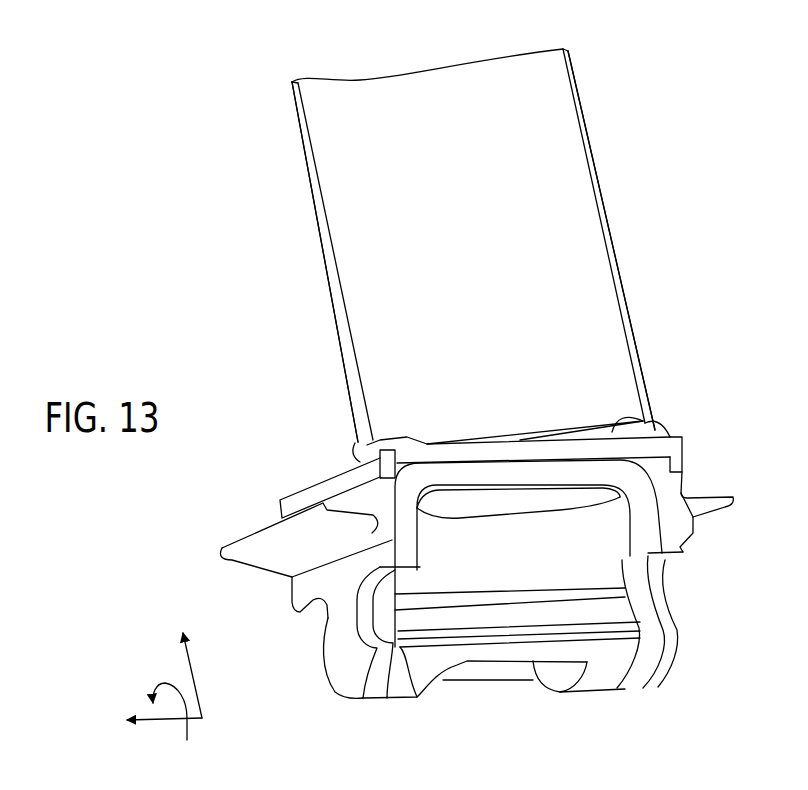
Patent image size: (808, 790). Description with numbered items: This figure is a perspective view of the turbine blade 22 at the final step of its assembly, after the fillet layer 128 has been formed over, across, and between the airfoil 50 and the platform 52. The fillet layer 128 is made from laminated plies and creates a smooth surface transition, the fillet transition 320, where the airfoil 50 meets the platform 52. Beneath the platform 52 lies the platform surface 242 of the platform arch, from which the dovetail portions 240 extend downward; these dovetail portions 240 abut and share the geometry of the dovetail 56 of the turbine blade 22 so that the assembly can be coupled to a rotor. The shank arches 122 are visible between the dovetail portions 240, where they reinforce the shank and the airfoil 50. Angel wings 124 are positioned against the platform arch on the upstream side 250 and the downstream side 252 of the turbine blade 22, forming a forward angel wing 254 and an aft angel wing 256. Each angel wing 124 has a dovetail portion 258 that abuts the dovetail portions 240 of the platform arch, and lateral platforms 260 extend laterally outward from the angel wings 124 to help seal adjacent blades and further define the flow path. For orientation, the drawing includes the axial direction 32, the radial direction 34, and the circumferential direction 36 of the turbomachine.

The turbine blade 22 is at (600, 58).
The airfoil 50 is at (565, 186).
The fillet layer 128 is at (426, 116).
The upstream side 250 is at (270, 231).
The downstream side 252 is at (655, 231).
The platform 52 is at (653, 450).
The fillet transition 320 is at (367, 447).
The platform surface 242 is at (600, 473).
The aft angel wing 256 is at (683, 503).
The angel wings 124 is at (362, 510).
The lateral platforms 260 is at (248, 538).
The shank arches 122 is at (488, 566).
The forward angel wing 254 is at (287, 573).
The dovetail portion 258 is at (342, 670).
The dovetail portions 240 is at (392, 683).
The dovetail 56 is at (500, 650).
The axial direction 32 is at (158, 720).
The radial direction 34 is at (195, 680).
The circumferential direction 36 is at (165, 685).